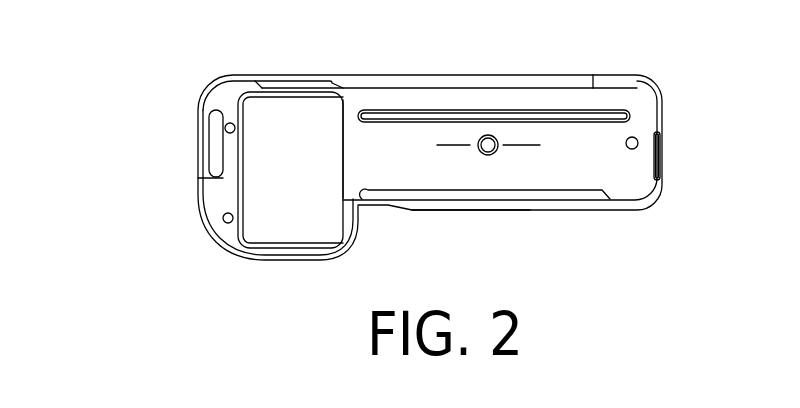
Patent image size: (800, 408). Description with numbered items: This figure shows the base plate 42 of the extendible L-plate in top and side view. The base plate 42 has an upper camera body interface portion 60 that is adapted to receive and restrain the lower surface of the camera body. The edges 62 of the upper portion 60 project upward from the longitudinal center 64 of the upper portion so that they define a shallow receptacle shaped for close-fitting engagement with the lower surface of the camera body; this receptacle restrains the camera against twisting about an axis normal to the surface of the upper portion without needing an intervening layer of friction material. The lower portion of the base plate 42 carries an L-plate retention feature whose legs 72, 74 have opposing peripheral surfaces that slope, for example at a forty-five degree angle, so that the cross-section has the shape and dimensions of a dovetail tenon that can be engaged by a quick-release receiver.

The base plate 42 is at (688, 125).
The upper camera body interface portion 60 is at (420, 171).
The edges 62 is at (629, 115).
The longitudinal center 64 is at (522, 142).
The leg 72 is at (478, 81).
The leg 74 is at (525, 208).